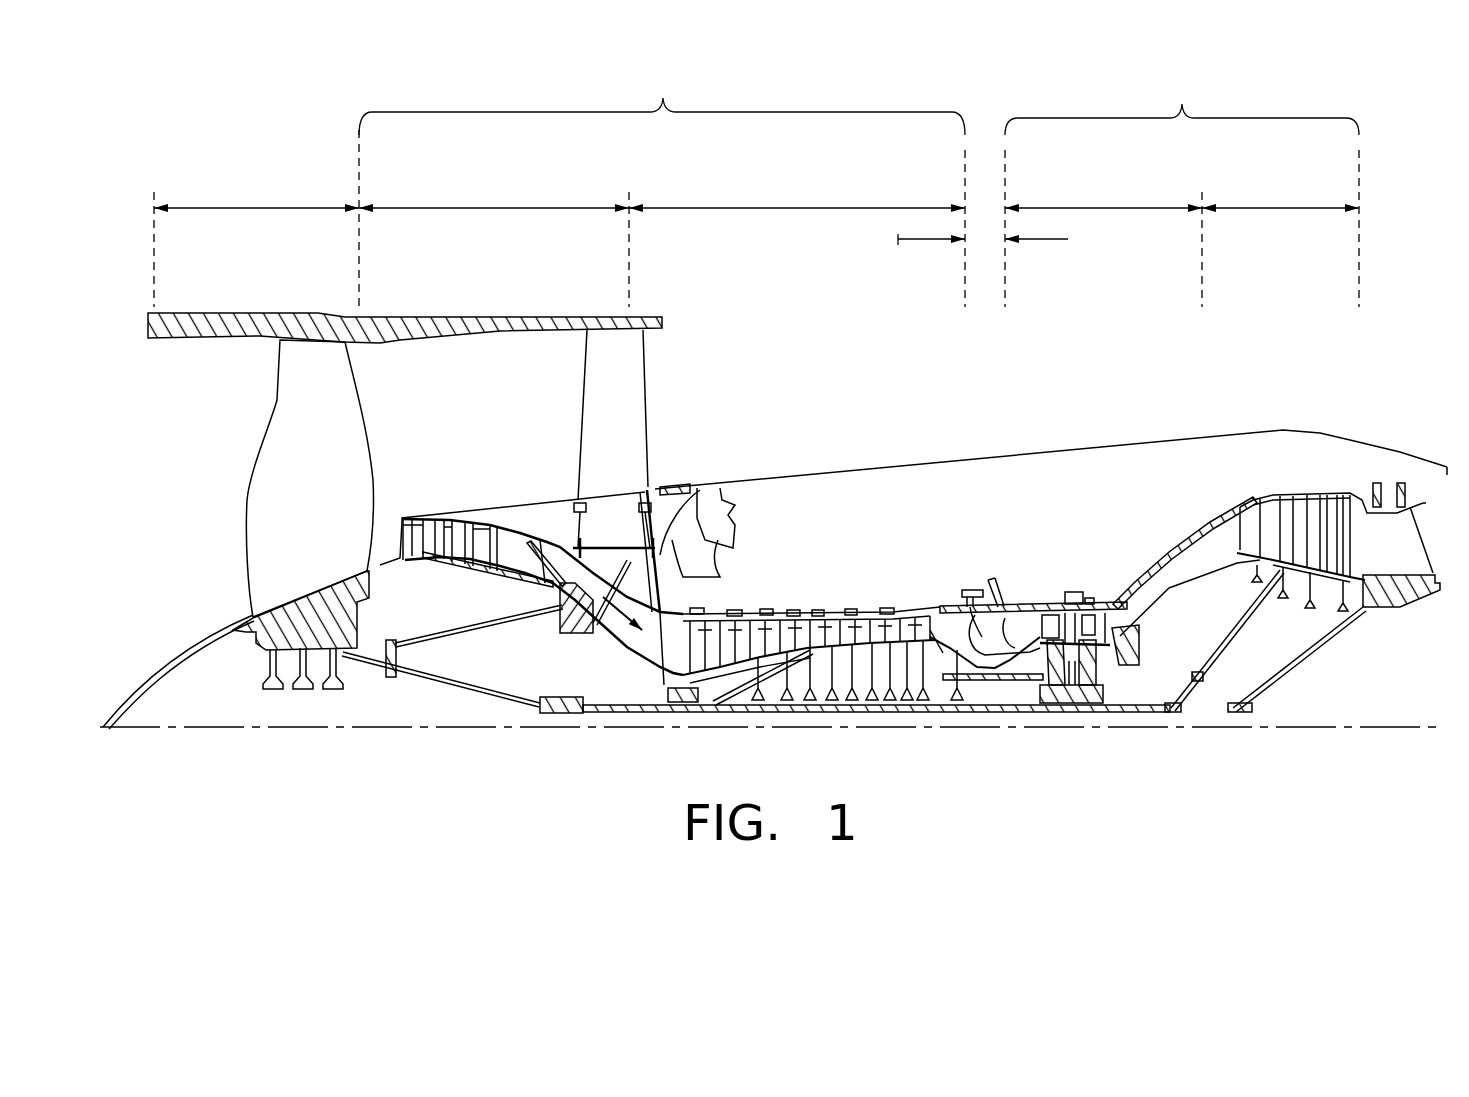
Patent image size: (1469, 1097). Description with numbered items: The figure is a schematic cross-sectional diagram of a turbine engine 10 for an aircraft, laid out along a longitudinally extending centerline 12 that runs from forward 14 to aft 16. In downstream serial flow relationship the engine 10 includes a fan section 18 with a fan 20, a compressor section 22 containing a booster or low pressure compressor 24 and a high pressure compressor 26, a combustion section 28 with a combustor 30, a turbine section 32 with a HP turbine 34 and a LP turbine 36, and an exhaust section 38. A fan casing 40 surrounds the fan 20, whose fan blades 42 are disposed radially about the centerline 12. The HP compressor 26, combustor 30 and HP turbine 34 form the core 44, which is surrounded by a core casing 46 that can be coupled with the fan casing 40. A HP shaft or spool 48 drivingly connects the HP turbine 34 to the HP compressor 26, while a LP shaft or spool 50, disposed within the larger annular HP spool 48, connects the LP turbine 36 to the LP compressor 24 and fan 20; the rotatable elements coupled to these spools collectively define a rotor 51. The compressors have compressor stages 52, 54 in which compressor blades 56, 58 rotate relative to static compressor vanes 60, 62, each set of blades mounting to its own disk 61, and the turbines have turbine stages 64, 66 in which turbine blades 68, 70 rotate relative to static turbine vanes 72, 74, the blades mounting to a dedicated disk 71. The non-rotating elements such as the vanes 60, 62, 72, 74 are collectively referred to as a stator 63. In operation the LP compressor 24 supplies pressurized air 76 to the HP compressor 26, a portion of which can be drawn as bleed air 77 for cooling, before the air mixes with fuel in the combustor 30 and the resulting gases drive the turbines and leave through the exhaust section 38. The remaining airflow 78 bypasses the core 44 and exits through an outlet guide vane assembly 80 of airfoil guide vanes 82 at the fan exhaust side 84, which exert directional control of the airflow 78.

The engine 10 is at (1376, 238).
The centerline 12 is at (235, 727).
The forward 14 is at (186, 450).
The aft 16 is at (1459, 547).
The fan section 18 is at (258, 208).
The fan 20 is at (232, 572).
The compressor section 22 is at (663, 100).
The low pressure compressor 24 is at (512, 208).
The high pressure compressor 26 is at (810, 208).
The combustion section 28 is at (905, 244).
The combustor 30 is at (990, 600).
The turbine section 32 is at (1182, 105).
The HP turbine 34 is at (1108, 208).
The LP turbine 36 is at (1300, 208).
The exhaust section 38 is at (1428, 524).
The fan casing 40 is at (398, 313).
The fan blades 42 is at (333, 382).
The core 44 is at (928, 493).
The core casing 46 is at (1188, 537).
The HP shaft or spool 48 is at (967, 680).
The LP shaft or spool 50 is at (560, 713).
The rotor 51 is at (827, 719).
The compressor stages 52 is at (477, 456).
The compressor stages 54 is at (793, 608).
The compressor blades 56 is at (435, 520).
The compressor blades 58 is at (730, 672).
The static compressor vanes 60 is at (443, 525).
The disk 61 is at (452, 563).
The static compressor vanes 62 is at (692, 660).
The stator 63 is at (693, 675).
The turbine stages 64 is at (1010, 552).
The turbine stages 66 is at (1285, 433).
The turbine blades 68 is at (1058, 598).
The turbine blades 70 is at (1343, 500).
The disk 71 is at (1257, 568).
The static turbine vanes 72 is at (1045, 598).
The static turbine vanes 74 is at (1325, 507).
The pressurized air 76 is at (596, 633).
The bleed air 77 is at (800, 623).
The airflow 78 is at (690, 387).
The outlet guide vane assembly 80 is at (659, 453).
The airfoil guide vanes 82 is at (590, 425).
The fan exhaust side 84 is at (665, 368).